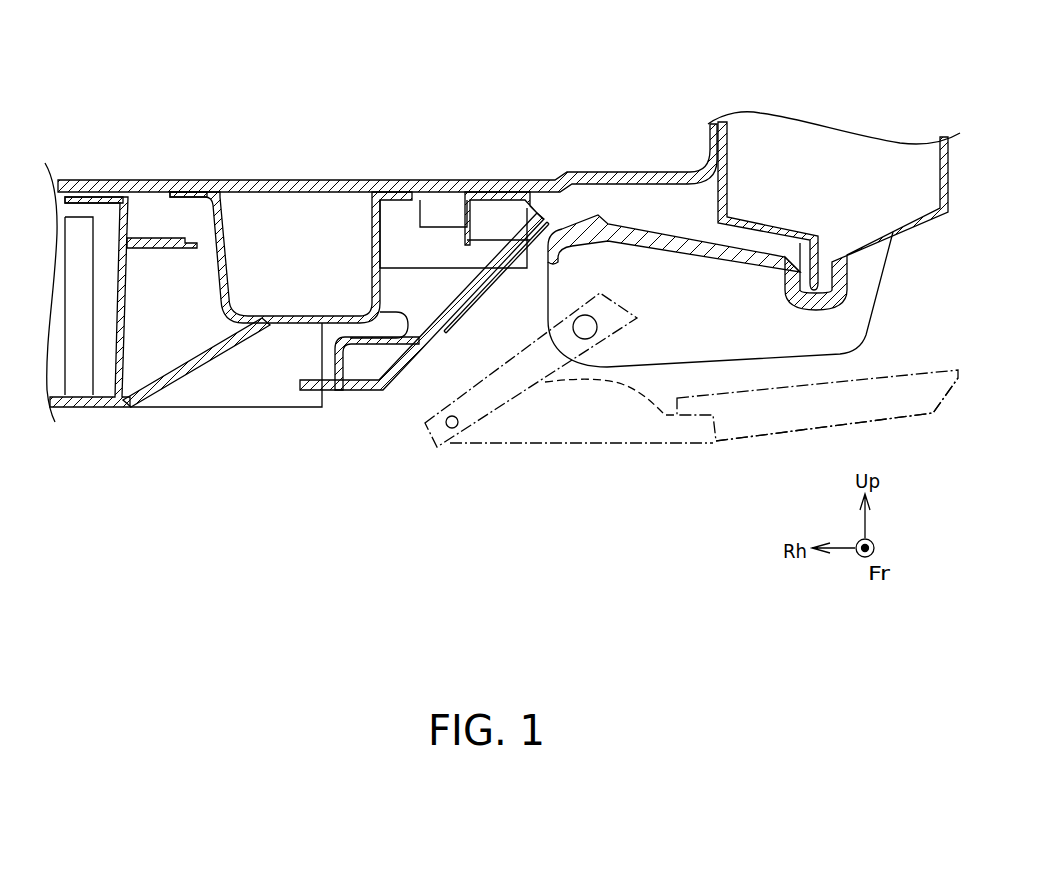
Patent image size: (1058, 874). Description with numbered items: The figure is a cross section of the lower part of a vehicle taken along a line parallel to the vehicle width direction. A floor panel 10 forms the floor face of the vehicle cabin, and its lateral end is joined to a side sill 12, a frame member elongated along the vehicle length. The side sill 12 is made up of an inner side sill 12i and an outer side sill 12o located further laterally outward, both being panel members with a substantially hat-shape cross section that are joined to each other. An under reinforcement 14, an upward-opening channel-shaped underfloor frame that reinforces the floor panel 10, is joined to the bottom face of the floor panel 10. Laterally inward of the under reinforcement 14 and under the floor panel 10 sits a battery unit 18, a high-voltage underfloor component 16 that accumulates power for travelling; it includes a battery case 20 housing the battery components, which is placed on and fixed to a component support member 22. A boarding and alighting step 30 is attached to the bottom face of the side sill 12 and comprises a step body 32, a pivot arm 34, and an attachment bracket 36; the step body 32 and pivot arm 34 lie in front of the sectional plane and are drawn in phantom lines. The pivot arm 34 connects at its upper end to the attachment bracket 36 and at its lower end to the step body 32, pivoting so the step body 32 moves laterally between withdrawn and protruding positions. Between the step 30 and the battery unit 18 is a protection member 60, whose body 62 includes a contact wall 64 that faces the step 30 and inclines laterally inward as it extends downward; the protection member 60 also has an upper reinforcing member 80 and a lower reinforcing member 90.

The floor panel 10 is at (293, 181).
The side sill 12 is at (902, 50).
The inner side sill 12i is at (782, 235).
The outer side sill 12o is at (880, 236).
The under reinforcement 14 is at (216, 219).
The underfloor component 16 is at (132, 215).
The battery unit 18 is at (135, 212).
The battery case 20 is at (119, 325).
The component support member 22 is at (255, 338).
The boarding and alighting step 30 is at (638, 456).
The step body 32 is at (738, 440).
The pivot arm 34 is at (585, 410).
The attachment bracket 36 is at (793, 363).
The protection member 60 is at (444, 334).
The body 62 is at (392, 392).
The contact wall 64 is at (476, 292).
The upper reinforcing member 80 is at (495, 240).
The lower reinforcing member 90 is at (360, 345).